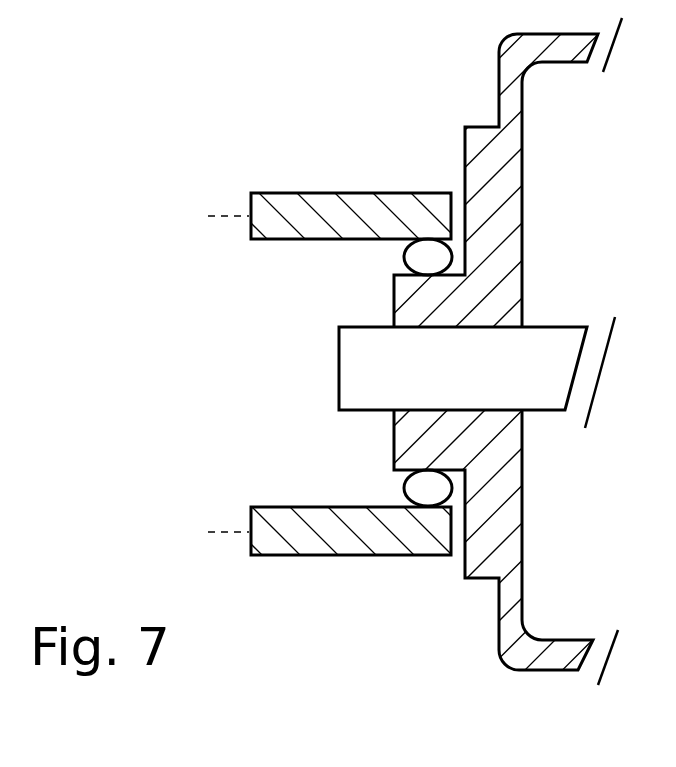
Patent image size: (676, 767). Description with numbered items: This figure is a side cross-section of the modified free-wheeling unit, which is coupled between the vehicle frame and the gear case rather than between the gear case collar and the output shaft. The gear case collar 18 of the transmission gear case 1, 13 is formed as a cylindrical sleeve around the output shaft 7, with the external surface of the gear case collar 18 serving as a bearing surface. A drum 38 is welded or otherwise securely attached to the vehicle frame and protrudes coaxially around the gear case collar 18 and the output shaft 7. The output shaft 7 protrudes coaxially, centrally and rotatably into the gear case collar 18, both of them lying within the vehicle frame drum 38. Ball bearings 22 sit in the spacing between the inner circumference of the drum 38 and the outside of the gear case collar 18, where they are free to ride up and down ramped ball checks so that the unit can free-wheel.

The transmission gear case 1 is at (338, 350).
The transmission gear case 13 is at (338, 350).
The output shaft 7 is at (435, 381).
The gear case collar 18 is at (590, 212).
The ball bearings 22 is at (404, 488).
The drum 38 is at (261, 370).